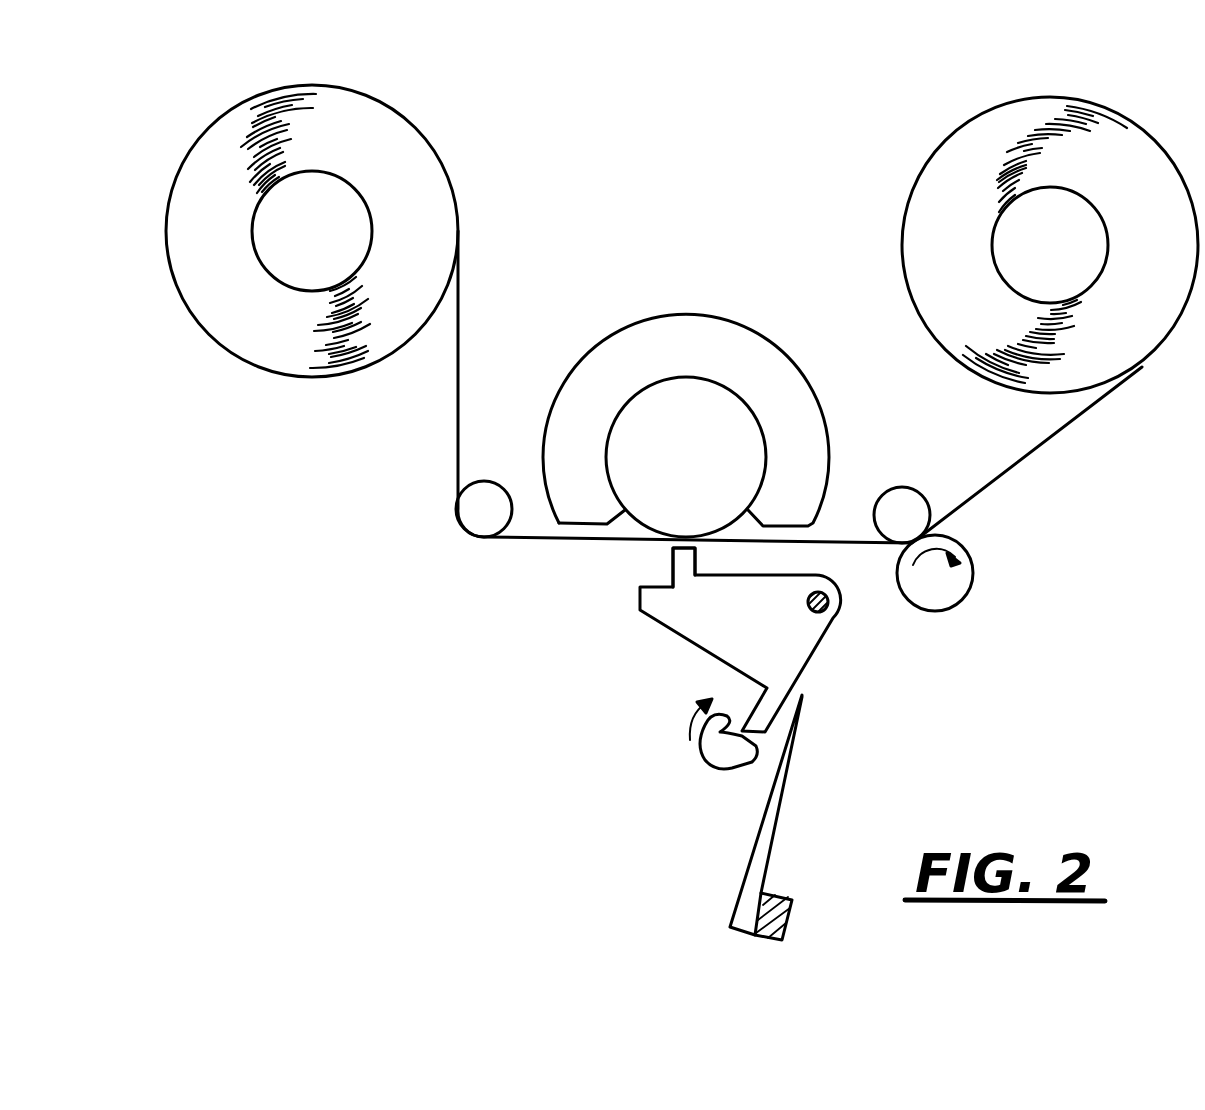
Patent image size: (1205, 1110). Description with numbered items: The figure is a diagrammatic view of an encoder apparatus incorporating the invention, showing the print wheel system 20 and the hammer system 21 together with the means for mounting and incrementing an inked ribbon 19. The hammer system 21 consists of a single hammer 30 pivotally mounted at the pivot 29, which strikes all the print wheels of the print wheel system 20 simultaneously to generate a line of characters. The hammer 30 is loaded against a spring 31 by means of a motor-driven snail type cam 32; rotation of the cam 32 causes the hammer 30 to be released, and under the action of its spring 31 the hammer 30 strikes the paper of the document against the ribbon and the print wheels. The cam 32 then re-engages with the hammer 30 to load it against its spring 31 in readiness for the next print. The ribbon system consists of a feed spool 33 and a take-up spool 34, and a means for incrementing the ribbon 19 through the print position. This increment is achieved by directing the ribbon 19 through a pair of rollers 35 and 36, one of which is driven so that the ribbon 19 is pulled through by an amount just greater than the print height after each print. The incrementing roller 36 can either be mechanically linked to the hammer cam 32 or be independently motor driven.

The inked ribbon 19 is at (1077, 415).
The print wheel system 20 is at (733, 297).
The hammer system 21 is at (695, 646).
The pivot 29 is at (833, 617).
The hammer 30 is at (677, 568).
The spring 31 is at (778, 798).
The snail type cam 32 is at (732, 753).
The feed spool 33 is at (285, 352).
The take-up spool 34 is at (948, 170).
The roller 35 is at (907, 498).
The incrementing roller 36 is at (962, 567).